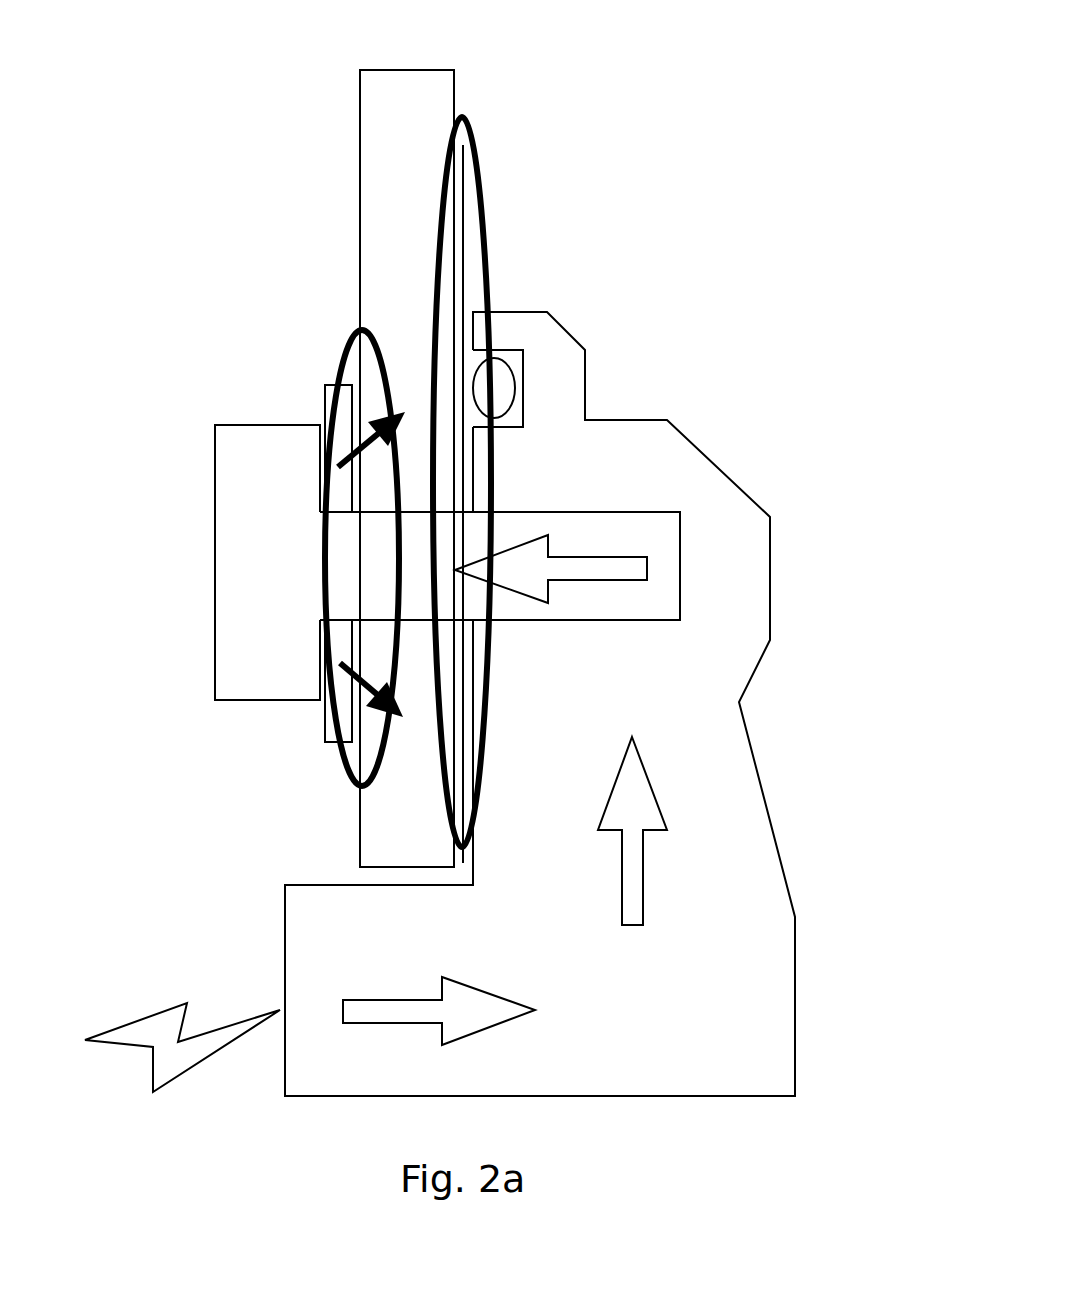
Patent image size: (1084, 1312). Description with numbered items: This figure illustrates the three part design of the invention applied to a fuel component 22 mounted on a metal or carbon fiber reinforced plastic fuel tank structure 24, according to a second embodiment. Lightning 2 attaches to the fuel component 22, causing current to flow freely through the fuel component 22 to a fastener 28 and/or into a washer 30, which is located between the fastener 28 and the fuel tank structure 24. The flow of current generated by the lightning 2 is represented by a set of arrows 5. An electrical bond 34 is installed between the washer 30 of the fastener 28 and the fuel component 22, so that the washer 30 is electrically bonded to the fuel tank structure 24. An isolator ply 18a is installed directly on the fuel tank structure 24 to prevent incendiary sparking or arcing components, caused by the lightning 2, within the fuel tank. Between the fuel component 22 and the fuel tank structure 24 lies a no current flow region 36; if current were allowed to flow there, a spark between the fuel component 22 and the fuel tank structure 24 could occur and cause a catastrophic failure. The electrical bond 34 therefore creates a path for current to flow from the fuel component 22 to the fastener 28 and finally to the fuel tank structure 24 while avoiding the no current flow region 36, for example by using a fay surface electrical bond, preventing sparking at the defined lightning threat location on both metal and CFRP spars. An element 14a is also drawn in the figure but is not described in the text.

The lightning 2 is at (158, 1023).
The set of arrows 5 is at (532, 600).
The sensor 14a is at (515, 388).
The isolator ply 18a is at (465, 293).
The fuel component 22 is at (788, 937).
The fuel tank structure 24 is at (411, 68).
The fastener 28 is at (658, 523).
The washer 30 is at (330, 743).
The electrical bond 34 is at (340, 354).
The no current flow region 36 is at (485, 168).